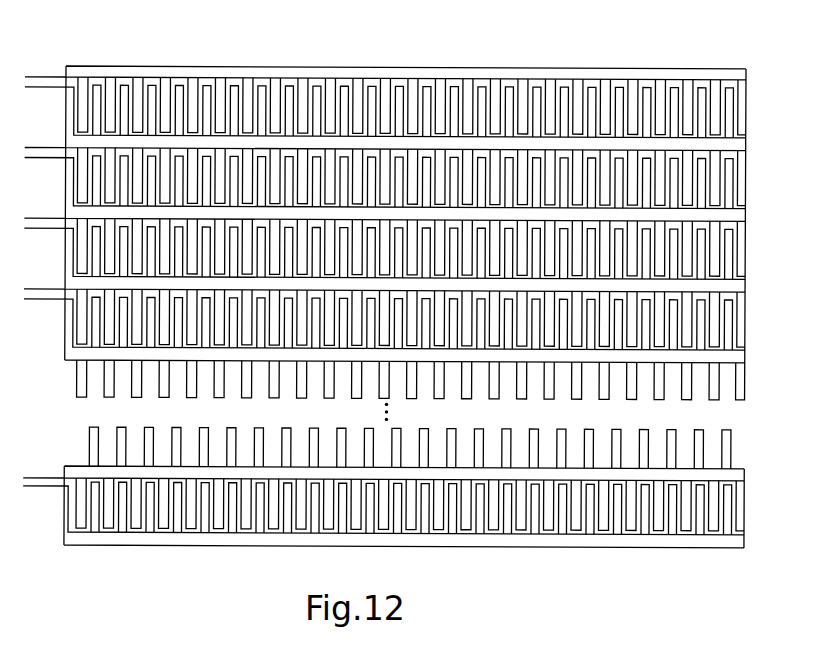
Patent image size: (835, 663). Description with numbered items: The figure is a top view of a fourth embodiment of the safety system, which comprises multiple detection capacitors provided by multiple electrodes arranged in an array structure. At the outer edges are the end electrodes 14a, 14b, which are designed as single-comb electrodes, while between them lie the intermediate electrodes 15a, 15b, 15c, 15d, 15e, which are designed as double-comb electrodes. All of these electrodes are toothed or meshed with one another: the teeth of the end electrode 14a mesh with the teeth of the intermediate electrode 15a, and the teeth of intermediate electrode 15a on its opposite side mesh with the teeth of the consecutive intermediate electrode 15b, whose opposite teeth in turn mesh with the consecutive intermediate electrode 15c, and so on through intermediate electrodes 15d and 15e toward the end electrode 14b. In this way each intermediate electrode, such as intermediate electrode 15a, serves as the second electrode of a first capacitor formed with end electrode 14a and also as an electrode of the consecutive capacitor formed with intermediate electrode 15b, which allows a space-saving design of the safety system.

The end electrode 14a is at (739, 72).
The end electrode 14b is at (717, 544).
The intermediate electrode 15a is at (740, 146).
The intermediate electrode 15b is at (740, 215).
The intermediate electrode 15c is at (738, 288).
The intermediate electrode 15d is at (738, 358).
The intermediate electrode 15e is at (733, 476).